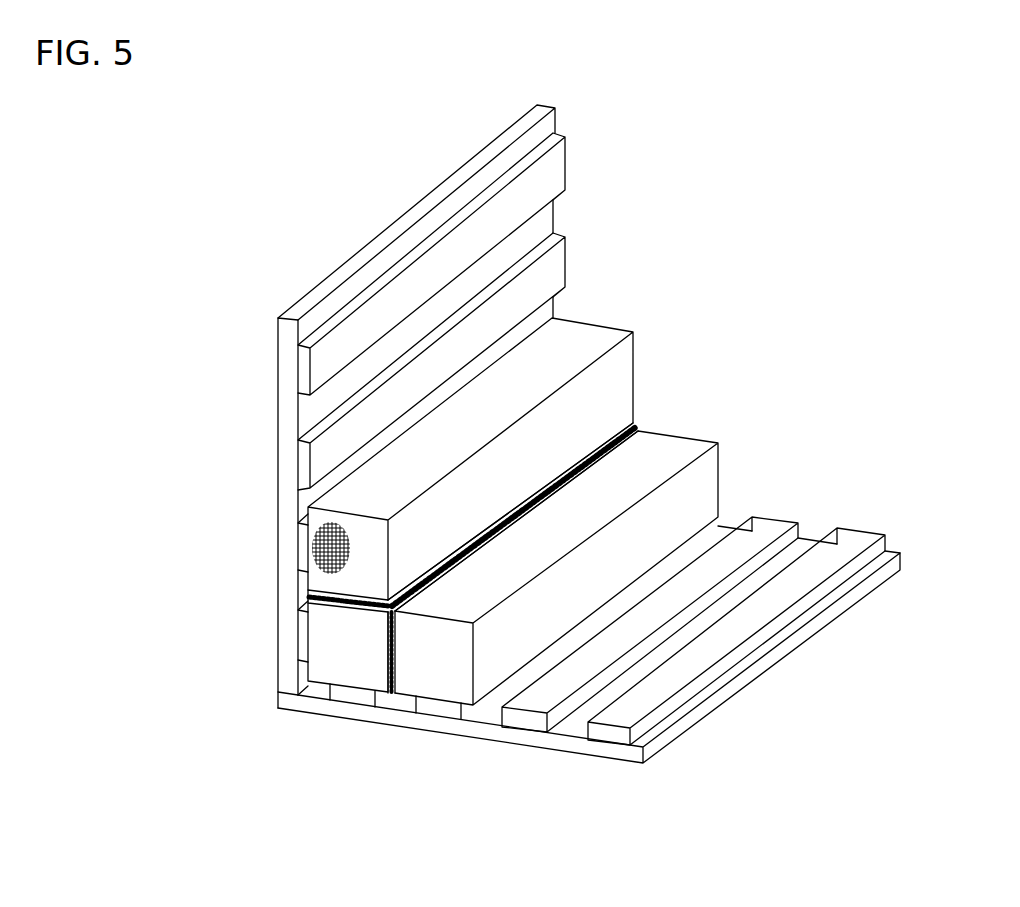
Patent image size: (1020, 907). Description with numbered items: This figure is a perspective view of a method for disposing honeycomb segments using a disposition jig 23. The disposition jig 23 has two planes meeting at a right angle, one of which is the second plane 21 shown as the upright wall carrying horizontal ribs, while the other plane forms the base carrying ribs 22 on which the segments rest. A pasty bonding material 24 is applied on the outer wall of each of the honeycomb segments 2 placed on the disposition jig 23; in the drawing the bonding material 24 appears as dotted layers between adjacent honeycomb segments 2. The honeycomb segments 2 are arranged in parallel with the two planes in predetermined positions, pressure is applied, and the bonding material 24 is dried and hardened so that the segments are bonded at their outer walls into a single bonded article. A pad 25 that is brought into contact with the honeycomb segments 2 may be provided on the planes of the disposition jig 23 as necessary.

The honeycomb segment 2 is at (443, 678).
The second plane 21 is at (498, 257).
The bottom ribs 22 is at (670, 640).
The disposition jig 23 is at (257, 408).
The bonding material 24 is at (387, 655).
The pad 25 is at (809, 565).